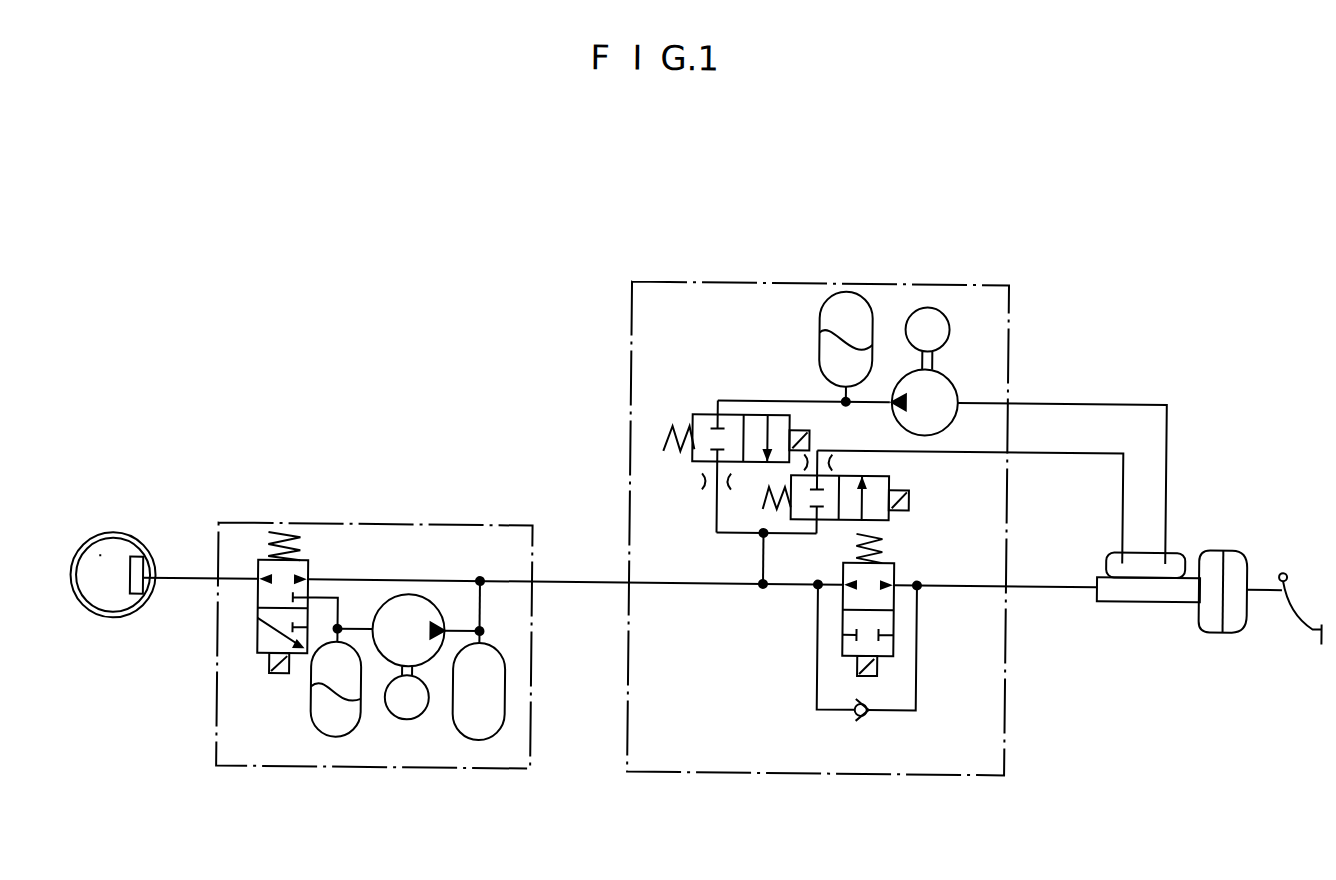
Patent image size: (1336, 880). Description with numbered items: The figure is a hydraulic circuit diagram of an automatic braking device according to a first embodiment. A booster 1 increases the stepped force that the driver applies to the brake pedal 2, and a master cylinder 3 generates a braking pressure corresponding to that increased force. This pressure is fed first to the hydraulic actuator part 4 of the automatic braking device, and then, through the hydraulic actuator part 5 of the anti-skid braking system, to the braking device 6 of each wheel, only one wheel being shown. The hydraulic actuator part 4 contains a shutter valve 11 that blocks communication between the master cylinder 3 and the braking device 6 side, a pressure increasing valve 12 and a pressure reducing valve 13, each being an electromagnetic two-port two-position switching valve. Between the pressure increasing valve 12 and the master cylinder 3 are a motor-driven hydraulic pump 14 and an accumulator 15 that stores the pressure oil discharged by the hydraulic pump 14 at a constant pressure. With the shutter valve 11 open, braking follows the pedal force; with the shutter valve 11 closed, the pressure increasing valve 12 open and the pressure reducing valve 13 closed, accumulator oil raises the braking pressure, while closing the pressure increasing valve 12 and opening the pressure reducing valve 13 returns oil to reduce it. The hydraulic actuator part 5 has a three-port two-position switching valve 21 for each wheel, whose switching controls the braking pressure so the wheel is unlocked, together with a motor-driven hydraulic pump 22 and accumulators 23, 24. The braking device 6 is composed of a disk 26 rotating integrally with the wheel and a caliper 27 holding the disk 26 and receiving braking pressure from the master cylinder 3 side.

The booster 1 is at (1238, 544).
The brake pedal 2 is at (1307, 621).
The master cylinder 3 is at (1152, 598).
The hydraulic actuator part of the automatic braking device 4 is at (902, 280).
The hydraulic actuator part of the anti-skid braking system 5 is at (460, 525).
The braking device 6 is at (123, 570).
The shutter valve 11 is at (895, 569).
The pressure increasing valve 12 is at (701, 413).
The pressure reducing valve 13 is at (889, 476).
The hydraulic pump 14 is at (955, 383).
The accumulator 15 is at (816, 320).
The 3-port 2-position switching valve 21 is at (256, 646).
The hydraulic pump 22 is at (429, 666).
The accumulator 23 is at (311, 703).
The accumulator 24 is at (505, 707).
The disk 26 is at (98, 589).
The caliper 27 is at (137, 588).